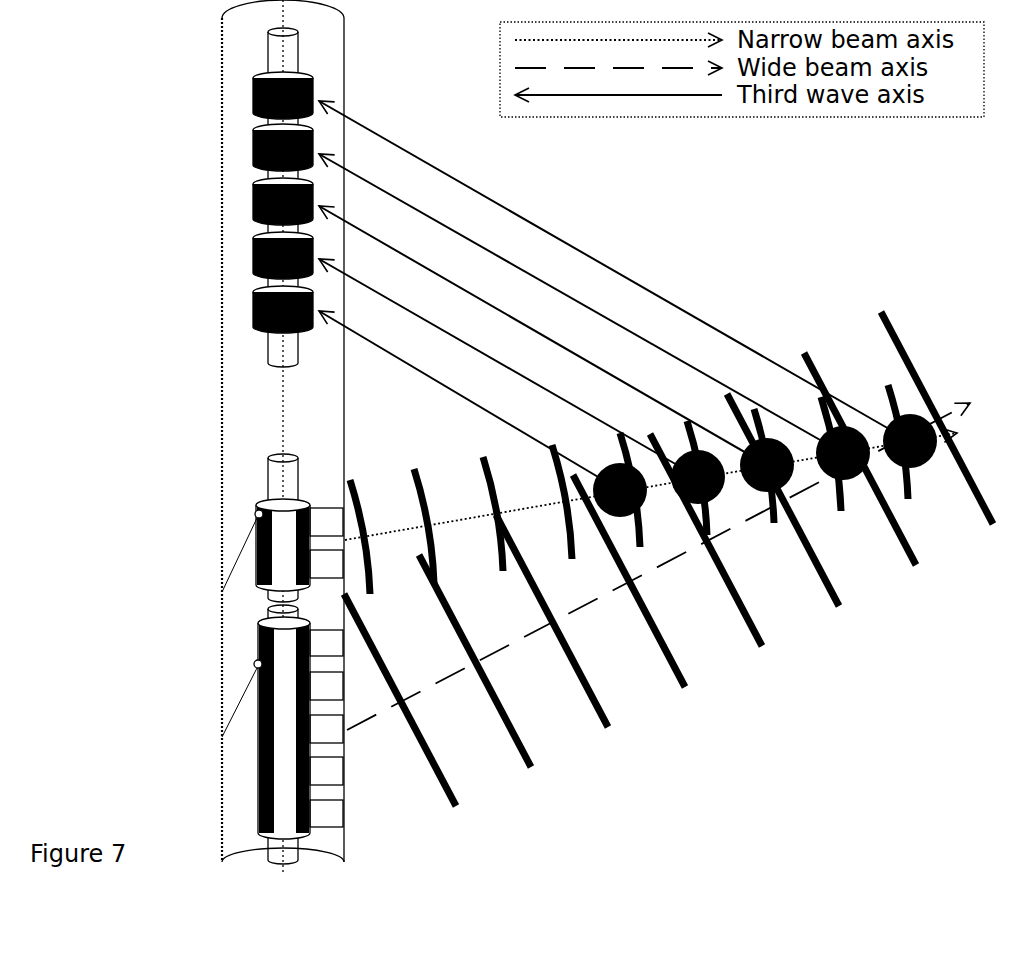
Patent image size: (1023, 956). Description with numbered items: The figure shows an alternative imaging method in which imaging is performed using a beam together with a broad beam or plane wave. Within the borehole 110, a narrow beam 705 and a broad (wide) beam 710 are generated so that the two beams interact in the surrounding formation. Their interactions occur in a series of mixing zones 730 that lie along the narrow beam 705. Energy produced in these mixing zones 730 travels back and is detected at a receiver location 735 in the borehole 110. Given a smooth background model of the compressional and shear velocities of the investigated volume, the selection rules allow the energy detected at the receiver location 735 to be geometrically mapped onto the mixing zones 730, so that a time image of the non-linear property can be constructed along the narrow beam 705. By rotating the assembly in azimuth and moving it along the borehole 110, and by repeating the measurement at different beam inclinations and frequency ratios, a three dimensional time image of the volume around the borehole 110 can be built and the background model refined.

The borehole 110 is at (195, 436).
The narrow beam 705 is at (195, 522).
The broad (wide) beam 710 is at (195, 734).
The mixing zones 730 is at (789, 364).
The receiver location 735 is at (179, 194).